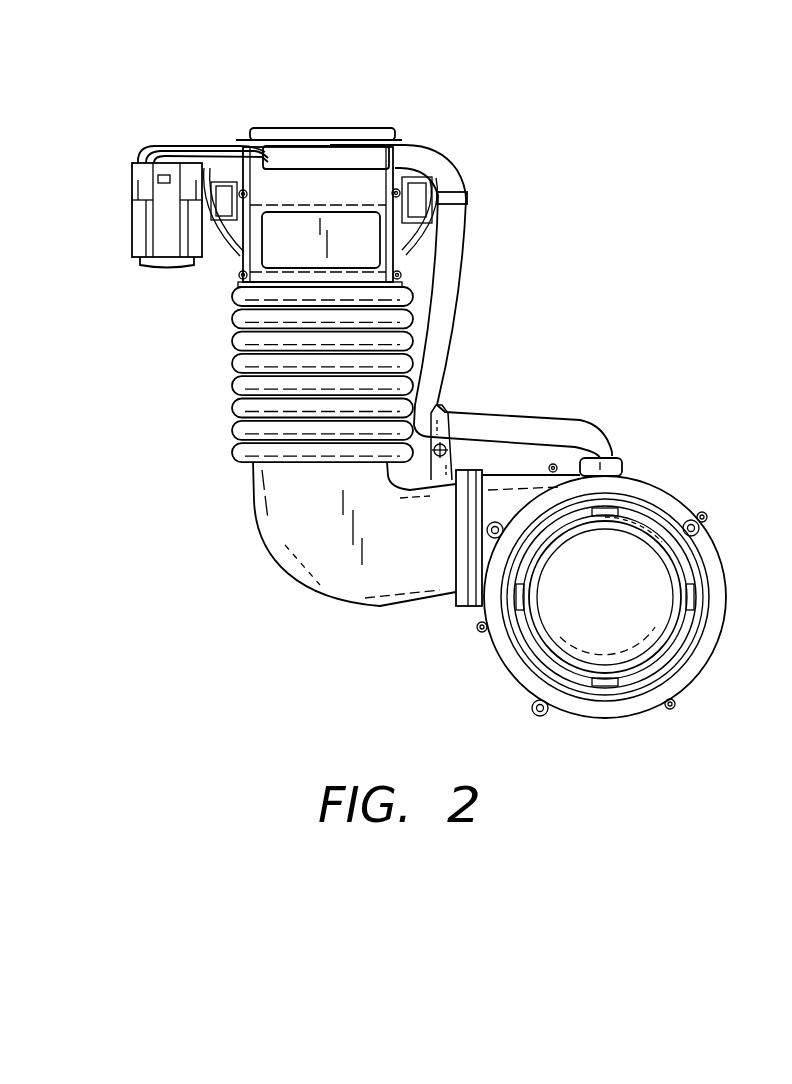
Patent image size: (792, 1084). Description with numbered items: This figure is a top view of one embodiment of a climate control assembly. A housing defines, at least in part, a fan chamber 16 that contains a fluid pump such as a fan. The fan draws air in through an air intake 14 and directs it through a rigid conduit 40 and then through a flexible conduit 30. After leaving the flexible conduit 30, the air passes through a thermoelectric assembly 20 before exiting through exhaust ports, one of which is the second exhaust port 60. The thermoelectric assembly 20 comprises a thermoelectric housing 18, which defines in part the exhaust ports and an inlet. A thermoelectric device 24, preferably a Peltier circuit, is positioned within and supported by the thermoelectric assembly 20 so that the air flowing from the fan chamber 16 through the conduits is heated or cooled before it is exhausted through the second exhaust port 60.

The air intake 14 is at (627, 502).
The fan chamber 16 is at (706, 670).
The thermoelectric housing 18 is at (298, 187).
The thermoelectric assembly 20 is at (170, 108).
The thermoelectric device 24 is at (360, 238).
The flexible conduit 30 is at (237, 375).
The rigid conduit 40 is at (320, 548).
The second exhaust port 60 is at (347, 128).